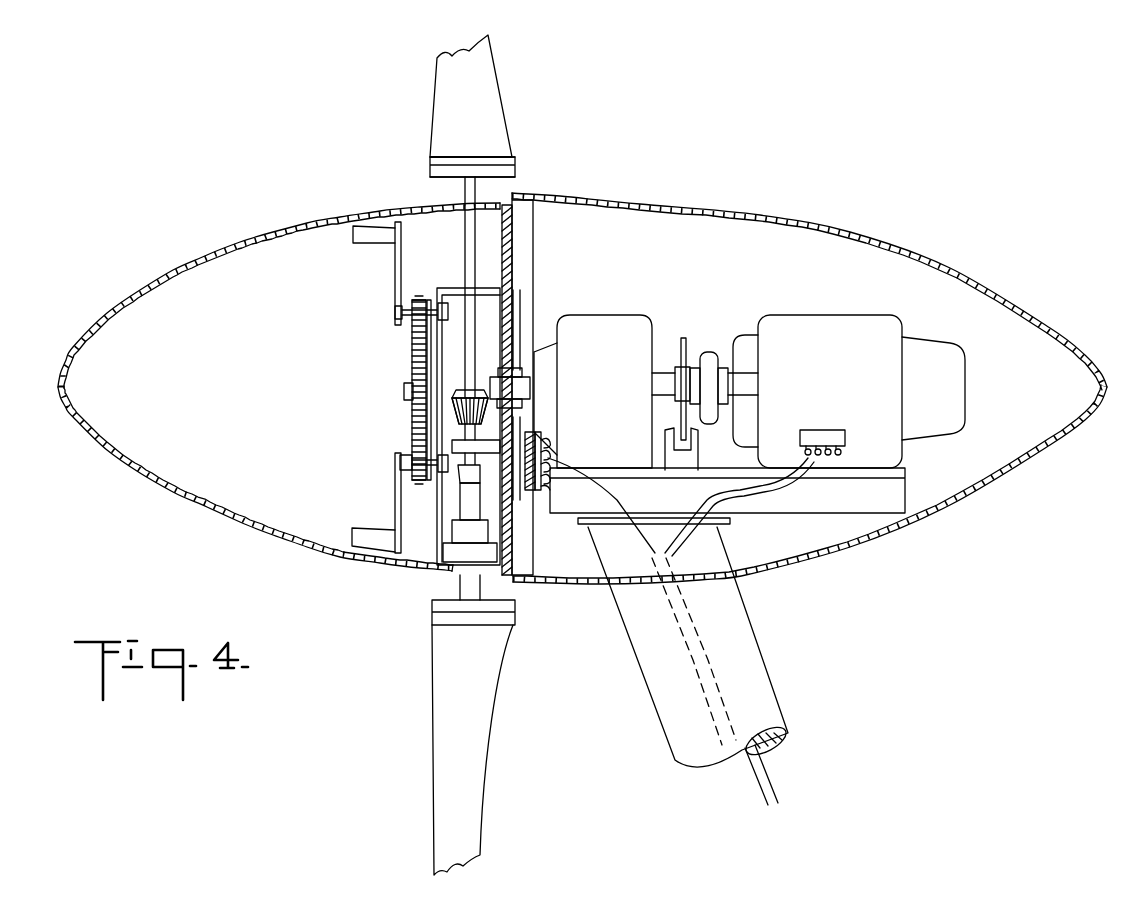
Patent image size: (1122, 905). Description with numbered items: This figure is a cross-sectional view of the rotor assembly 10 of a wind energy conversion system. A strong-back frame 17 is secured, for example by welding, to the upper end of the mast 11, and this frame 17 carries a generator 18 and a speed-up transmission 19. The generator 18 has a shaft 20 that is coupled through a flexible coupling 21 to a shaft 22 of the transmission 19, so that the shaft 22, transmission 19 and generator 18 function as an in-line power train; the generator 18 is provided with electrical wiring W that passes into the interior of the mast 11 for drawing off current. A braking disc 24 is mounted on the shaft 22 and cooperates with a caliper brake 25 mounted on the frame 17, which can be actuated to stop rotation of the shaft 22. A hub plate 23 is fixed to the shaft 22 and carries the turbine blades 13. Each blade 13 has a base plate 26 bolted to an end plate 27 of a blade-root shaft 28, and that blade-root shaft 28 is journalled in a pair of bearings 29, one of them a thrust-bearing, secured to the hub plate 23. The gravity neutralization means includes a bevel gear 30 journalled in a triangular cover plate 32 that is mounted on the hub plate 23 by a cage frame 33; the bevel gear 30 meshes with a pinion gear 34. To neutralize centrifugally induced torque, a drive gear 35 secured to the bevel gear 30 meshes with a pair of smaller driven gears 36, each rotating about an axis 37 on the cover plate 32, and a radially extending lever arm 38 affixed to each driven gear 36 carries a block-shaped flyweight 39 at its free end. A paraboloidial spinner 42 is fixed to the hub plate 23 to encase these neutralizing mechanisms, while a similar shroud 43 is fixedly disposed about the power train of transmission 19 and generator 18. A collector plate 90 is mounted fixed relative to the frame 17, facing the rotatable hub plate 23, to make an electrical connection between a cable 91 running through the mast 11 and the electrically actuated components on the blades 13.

The rotor assembly 10 is at (253, 213).
The mast 11 is at (779, 648).
The turbine blade 13 is at (488, 112).
The strong-back frame 17 is at (893, 482).
The generator 18 is at (830, 315).
The speed-up transmission 19 is at (626, 315).
The shaft 20 is at (730, 382).
The flexible coupling 21 is at (711, 352).
The shaft 22 is at (672, 385).
The hub plate 23 is at (532, 240).
The braking disc 24 is at (683, 338).
The caliper brake 25 is at (698, 462).
The base plate 26 is at (514, 165).
The end plate 27 is at (514, 176).
The blade-root shaft 28 is at (458, 190).
The bearings 29 is at (462, 545).
The bevel gear 30 is at (445, 355).
The cover plate 32 is at (412, 340).
The cage frame 33 is at (455, 288).
The pinion gear 34 is at (470, 392).
The drive gear 35 is at (404, 412).
The driven gears 36 is at (418, 297).
The axis 37 is at (395, 312).
The lever arm 38 is at (395, 266).
The flyweight 39 is at (350, 240).
The spinner 42 is at (145, 278).
The shroud 43 is at (798, 218).
The collector plate 90 is at (538, 440).
The cable 91 is at (625, 480).
The electrical wiring W is at (826, 430).